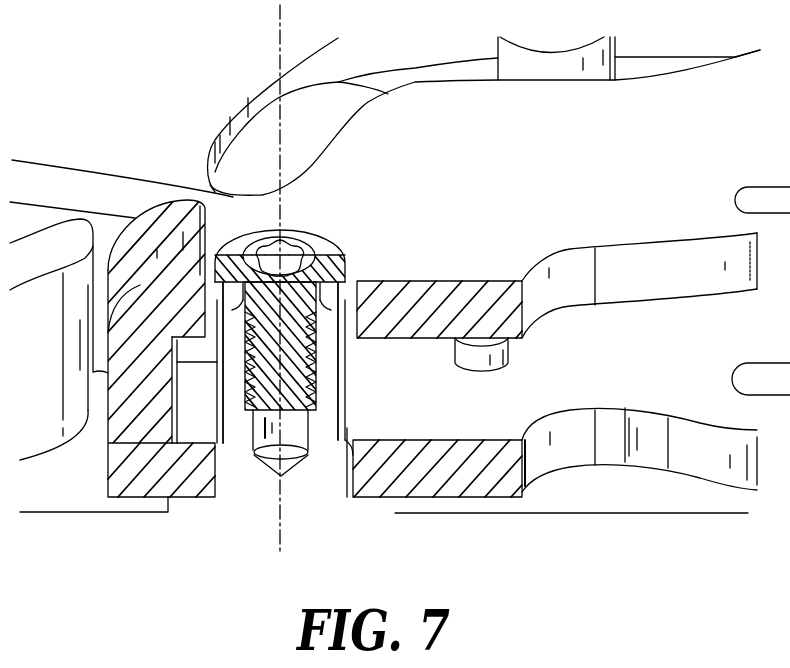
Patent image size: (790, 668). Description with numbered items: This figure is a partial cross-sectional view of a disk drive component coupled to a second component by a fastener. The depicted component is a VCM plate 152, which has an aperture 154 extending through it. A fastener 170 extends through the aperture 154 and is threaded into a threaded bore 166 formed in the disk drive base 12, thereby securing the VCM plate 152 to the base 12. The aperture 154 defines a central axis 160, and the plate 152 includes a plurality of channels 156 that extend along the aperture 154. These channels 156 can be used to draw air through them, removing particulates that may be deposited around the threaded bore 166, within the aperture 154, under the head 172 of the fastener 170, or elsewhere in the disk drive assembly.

The disk drive base 12 is at (251, 503).
The VCM plate 152 is at (644, 171).
The aperture 154 is at (353, 347).
The channel 156 is at (357, 281).
The central axis 160 is at (278, 91).
The threaded bore 166 is at (321, 384).
The fastener 170 is at (231, 219).
The head 172 is at (315, 236).